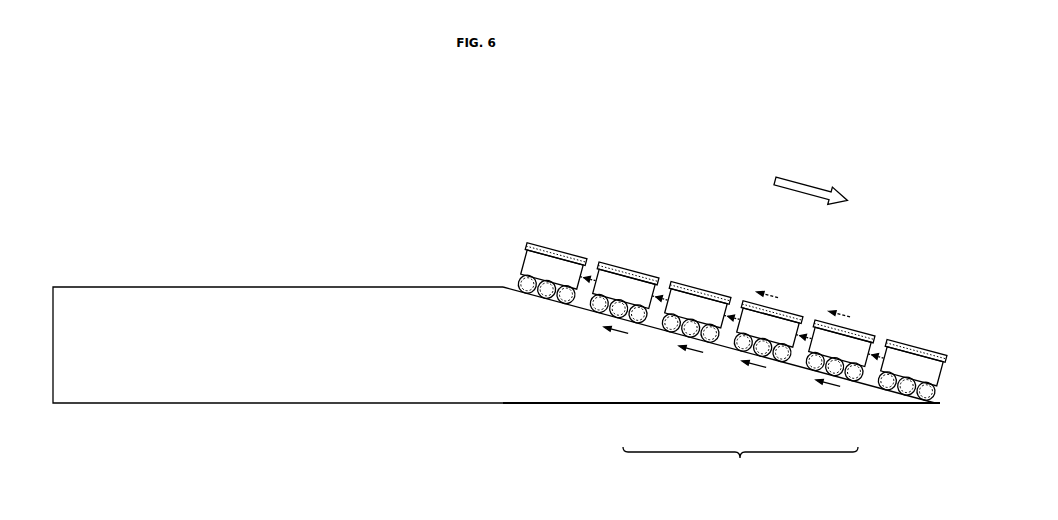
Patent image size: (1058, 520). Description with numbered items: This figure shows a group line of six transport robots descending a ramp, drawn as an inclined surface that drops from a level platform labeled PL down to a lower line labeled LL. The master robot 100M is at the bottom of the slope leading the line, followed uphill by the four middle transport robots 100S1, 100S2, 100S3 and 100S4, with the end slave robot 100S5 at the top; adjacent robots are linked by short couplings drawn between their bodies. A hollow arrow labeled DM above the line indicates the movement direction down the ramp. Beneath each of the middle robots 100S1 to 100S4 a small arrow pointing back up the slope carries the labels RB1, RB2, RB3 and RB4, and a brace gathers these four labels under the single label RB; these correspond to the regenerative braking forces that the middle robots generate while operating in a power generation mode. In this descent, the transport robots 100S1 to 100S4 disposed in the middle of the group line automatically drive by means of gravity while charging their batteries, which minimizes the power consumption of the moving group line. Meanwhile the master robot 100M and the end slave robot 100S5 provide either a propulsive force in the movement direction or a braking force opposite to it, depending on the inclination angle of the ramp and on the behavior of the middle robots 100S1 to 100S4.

The end slave robot 100S5 is at (562, 250).
The transport robot 100S4 is at (633, 269).
The transport robot 100S3 is at (705, 289).
The transport robot 100S2 is at (777, 308).
The transport robot 100S1 is at (849, 327).
The master robot 100M is at (921, 347).
The moving direction DM is at (811, 187).
The fourth rolling back region RB4 is at (614, 334).
The third rolling back region RB3 is at (690, 353).
The second rolling back region RB2 is at (754, 369).
The first rolling back region RB1 is at (826, 388).
The rolling back regions RB is at (740, 463).
The plane PL is at (276, 405).
The lower line LL is at (562, 405).